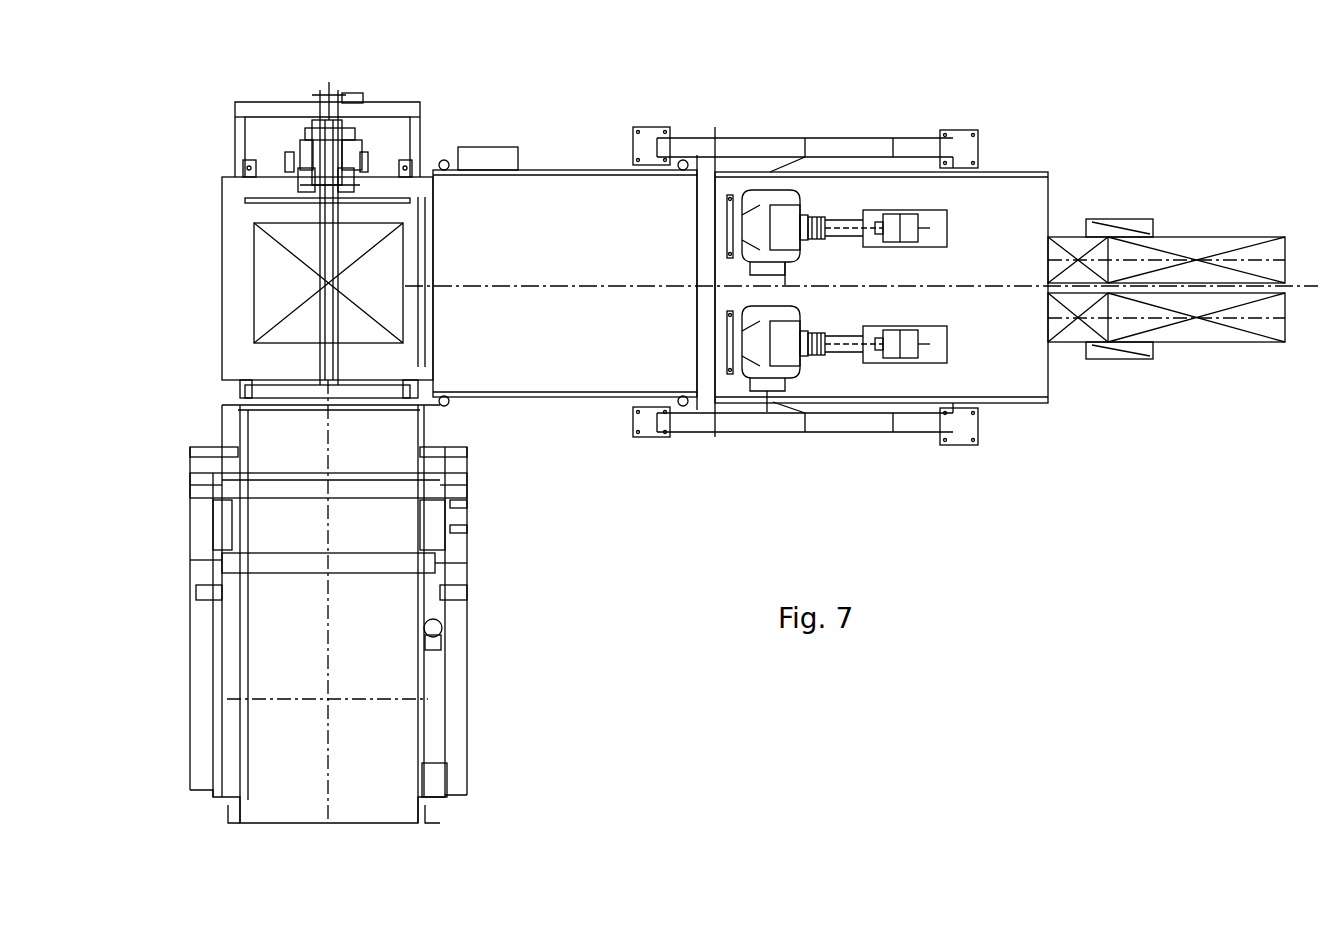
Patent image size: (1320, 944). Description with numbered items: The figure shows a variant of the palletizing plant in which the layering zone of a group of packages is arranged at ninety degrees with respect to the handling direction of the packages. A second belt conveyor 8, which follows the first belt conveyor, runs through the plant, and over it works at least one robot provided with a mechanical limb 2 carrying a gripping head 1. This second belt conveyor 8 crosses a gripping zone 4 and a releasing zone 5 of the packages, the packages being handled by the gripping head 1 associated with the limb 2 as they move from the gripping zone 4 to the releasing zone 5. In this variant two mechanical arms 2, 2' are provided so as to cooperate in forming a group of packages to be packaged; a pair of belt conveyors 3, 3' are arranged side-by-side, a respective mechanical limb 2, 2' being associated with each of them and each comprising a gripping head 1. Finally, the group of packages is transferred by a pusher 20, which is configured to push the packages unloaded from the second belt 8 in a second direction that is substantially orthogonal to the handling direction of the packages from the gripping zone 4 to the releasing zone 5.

The gripping head 1 is at (925, 200).
The mechanical limb 2 is at (845, 408).
The mechanical arm 2' is at (845, 163).
The belt conveyor 3 is at (1166, 363).
The belt conveyor 3' is at (1166, 226).
The gripping zone 4 is at (995, 323).
The releasing zone 5 is at (843, 290).
The second belt conveyor 8 is at (545, 200).
The pusher 20 is at (278, 178).